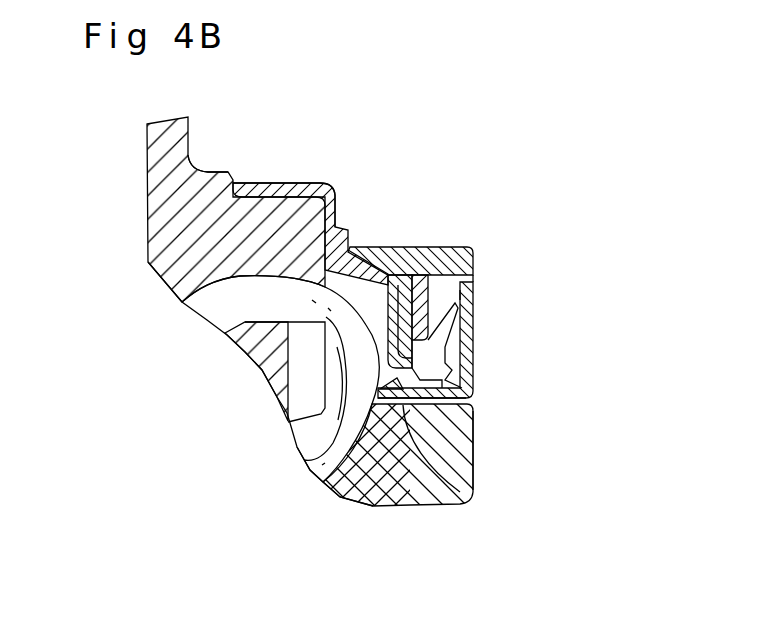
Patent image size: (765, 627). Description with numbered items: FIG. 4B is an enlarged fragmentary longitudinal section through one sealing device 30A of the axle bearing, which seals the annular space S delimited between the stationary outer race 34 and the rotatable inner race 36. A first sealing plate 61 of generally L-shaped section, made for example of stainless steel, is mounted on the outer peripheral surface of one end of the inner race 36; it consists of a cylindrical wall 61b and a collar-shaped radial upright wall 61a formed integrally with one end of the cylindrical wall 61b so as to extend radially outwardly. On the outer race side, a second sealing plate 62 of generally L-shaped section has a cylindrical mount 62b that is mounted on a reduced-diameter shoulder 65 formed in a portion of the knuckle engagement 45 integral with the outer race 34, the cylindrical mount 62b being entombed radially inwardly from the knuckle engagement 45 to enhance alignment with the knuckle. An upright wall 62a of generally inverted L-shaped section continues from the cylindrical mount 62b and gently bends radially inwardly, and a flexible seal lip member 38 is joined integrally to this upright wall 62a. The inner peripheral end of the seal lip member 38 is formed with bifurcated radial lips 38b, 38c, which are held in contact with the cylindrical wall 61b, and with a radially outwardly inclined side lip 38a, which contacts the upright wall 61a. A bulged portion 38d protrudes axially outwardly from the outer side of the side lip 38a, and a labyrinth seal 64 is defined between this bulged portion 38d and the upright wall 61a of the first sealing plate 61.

The outer race 34 is at (152, 165).
The knuckle engagement 45 is at (209, 172).
The second sealing plate 62 is at (344, 205).
The upright wall 62a is at (380, 347).
The cylindrical mount 62b is at (268, 184).
The reduced-diameter shoulder 65 is at (334, 190).
The annular space S is at (357, 297).
The seal lip member 38 is at (423, 300).
The side lip 38a is at (438, 300).
The radial lip 38b is at (394, 445).
The radial lip 38c is at (343, 495).
The bulged portion 38d is at (460, 260).
The inner race 36 is at (436, 493).
The first sealing plate 61 is at (474, 327).
The radial upright wall 61a is at (468, 367).
The cylindrical wall 61b is at (472, 473).
The labyrinth seal 64 is at (489, 280).
The sealing device 30A is at (497, 303).